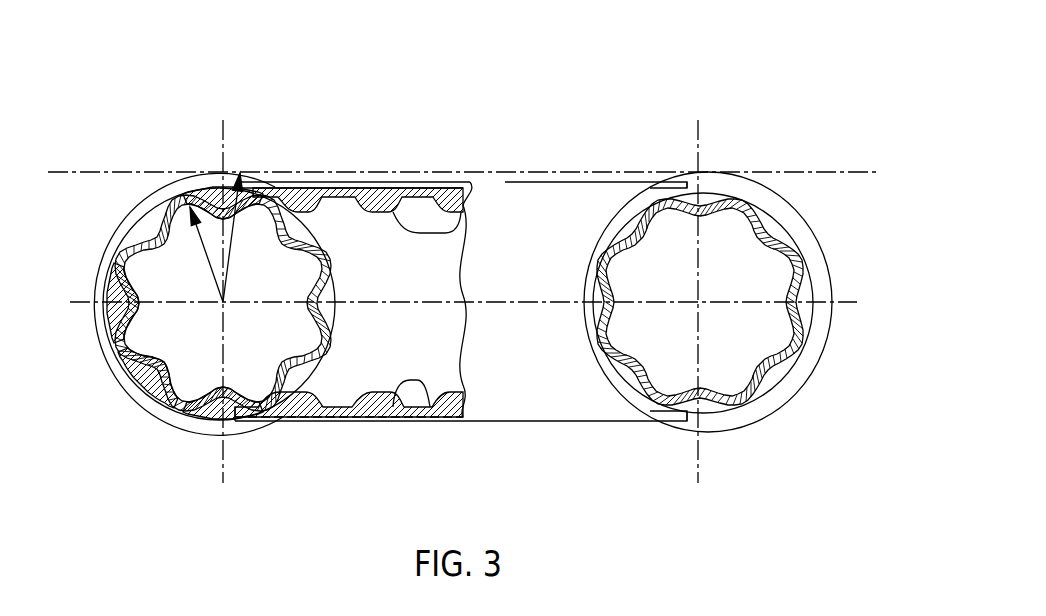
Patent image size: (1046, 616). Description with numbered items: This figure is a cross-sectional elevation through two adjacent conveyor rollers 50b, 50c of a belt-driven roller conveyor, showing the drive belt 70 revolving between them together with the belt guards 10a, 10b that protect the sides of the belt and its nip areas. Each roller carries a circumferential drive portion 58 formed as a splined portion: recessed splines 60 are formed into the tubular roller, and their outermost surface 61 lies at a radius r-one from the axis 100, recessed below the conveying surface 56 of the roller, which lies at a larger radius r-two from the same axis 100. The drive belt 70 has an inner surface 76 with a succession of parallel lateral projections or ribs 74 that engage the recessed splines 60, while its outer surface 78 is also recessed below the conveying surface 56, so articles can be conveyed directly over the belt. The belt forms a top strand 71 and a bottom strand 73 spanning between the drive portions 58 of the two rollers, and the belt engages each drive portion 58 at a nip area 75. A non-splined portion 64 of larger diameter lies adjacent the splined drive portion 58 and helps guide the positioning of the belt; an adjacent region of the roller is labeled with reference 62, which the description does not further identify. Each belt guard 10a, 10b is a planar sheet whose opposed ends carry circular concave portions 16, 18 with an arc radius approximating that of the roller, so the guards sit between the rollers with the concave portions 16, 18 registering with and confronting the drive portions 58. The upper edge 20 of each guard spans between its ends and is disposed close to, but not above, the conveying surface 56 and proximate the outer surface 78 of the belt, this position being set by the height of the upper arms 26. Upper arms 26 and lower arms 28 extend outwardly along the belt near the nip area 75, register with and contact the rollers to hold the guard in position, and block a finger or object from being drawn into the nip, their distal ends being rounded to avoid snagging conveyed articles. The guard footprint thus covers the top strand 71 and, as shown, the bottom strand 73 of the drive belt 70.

The belt guard 10a is at (547, 272).
The belt guard 10b is at (423, 340).
The concave portion 16 is at (585, 312).
The concave portion 18 is at (360, 245).
The upper edge 20 is at (464, 196).
The upper arm 26 is at (643, 193).
The lower arm 28 is at (640, 411).
The roller 50b is at (807, 237).
The roller 50c is at (110, 333).
The conveying surface 56 is at (110, 172).
The drive portion 58 is at (773, 233).
The recessed splines 60 is at (332, 215).
The outermost surface 61 is at (180, 205).
The ring bore 62 is at (620, 230).
The non-splined portion 64 is at (586, 320).
The drive belt 70 is at (373, 397).
The top strand 71 is at (388, 197).
The bottom strand 73 is at (293, 422).
The lateral projections or ribs 74 is at (417, 410).
The nip area 75 is at (277, 205).
The inner surface 76 is at (466, 225).
The outer surface 78 is at (437, 208).
The axis 100 is at (222, 305).